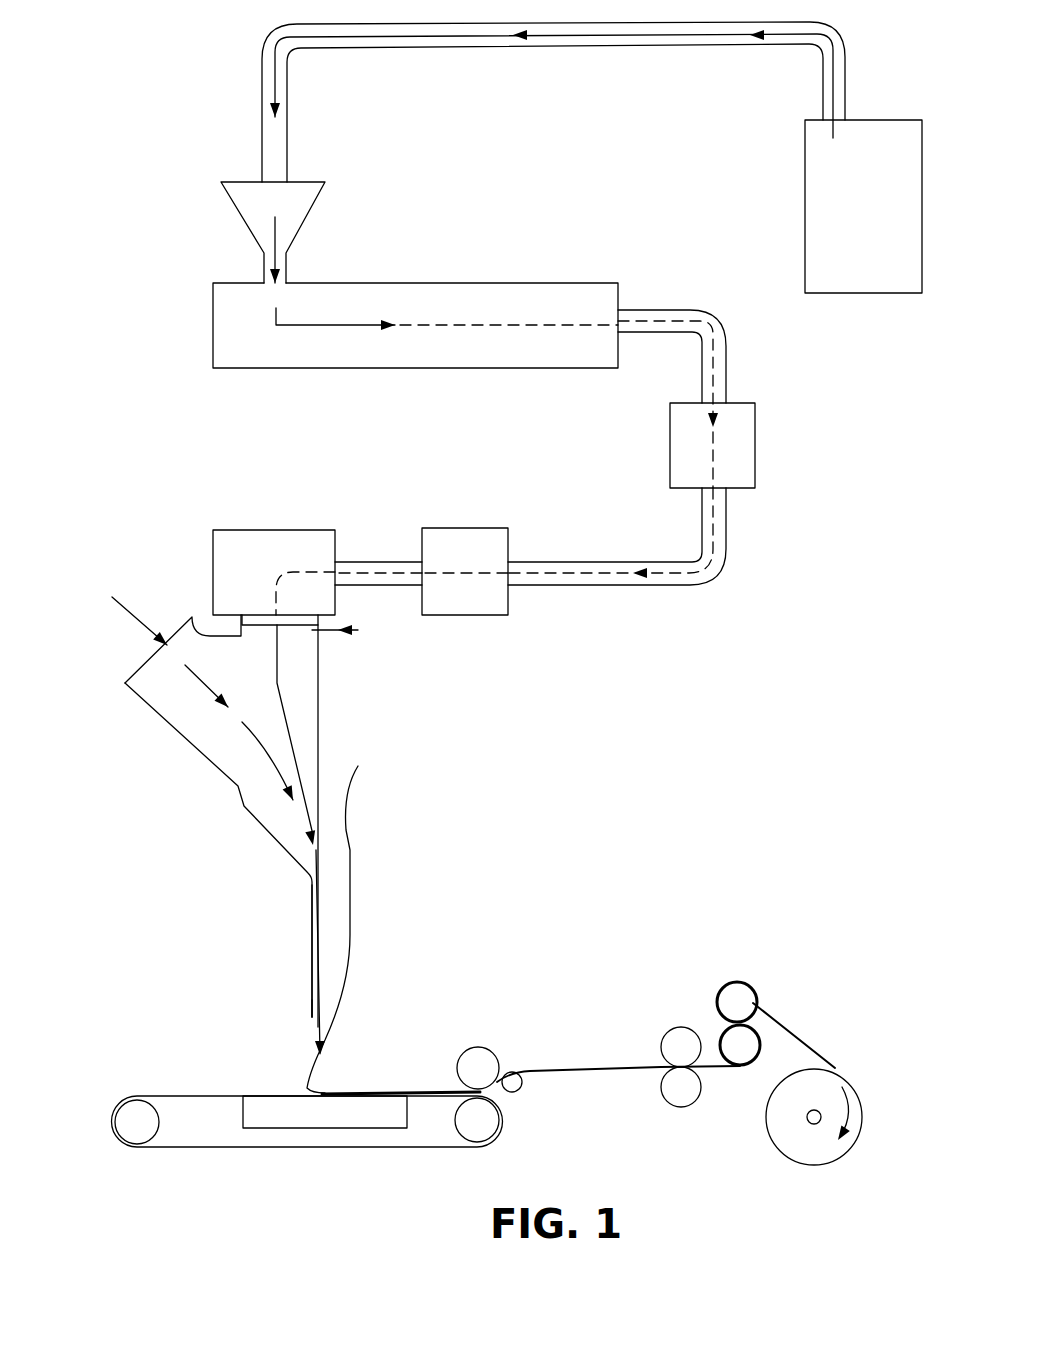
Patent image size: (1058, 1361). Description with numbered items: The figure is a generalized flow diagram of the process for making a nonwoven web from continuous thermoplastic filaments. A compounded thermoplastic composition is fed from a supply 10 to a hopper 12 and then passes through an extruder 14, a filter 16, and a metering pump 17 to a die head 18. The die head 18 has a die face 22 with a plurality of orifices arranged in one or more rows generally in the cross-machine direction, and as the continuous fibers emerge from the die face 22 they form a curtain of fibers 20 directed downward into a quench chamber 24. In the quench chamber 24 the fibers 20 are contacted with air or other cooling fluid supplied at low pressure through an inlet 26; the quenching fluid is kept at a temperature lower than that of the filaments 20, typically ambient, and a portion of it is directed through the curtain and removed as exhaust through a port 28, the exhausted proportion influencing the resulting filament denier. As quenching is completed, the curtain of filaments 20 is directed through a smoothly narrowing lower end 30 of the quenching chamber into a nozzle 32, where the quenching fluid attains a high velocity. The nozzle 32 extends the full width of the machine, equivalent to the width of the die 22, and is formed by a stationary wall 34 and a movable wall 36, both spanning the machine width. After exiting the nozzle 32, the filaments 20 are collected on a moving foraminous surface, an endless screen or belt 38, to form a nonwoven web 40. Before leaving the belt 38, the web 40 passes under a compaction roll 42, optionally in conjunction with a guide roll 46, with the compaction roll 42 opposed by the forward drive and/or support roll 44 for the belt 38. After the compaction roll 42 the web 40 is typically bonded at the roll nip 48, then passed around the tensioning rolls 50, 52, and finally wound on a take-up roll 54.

The supply 10 is at (873, 221).
The hopper 12 is at (278, 212).
The extruder 14 is at (483, 315).
The filter 16 is at (705, 464).
The metering pump 17 is at (478, 563).
The die head 18 is at (260, 570).
The curtain of fibers 20 is at (290, 692).
The die face 22 is at (302, 632).
The quench chamber 24 is at (255, 685).
The inlet 26 is at (158, 647).
The port 28 is at (343, 640).
The smoothly narrowing lower end 30 is at (290, 847).
The nozzle 32 is at (312, 1025).
The stationary wall 34 is at (325, 942).
The movable wall 36 is at (312, 927).
The belt 38 is at (184, 1093).
The nonwoven web 40 is at (372, 1087).
The compaction roll 42 is at (480, 1058).
The forward drive and/or support roll 44 is at (492, 1122).
The guide roll 46 is at (523, 1087).
The roll nip 48 is at (653, 1063).
The tensioning roll 50 is at (735, 995).
The tensioning roll 52 is at (745, 1043).
The take-up roll 54 is at (787, 1132).